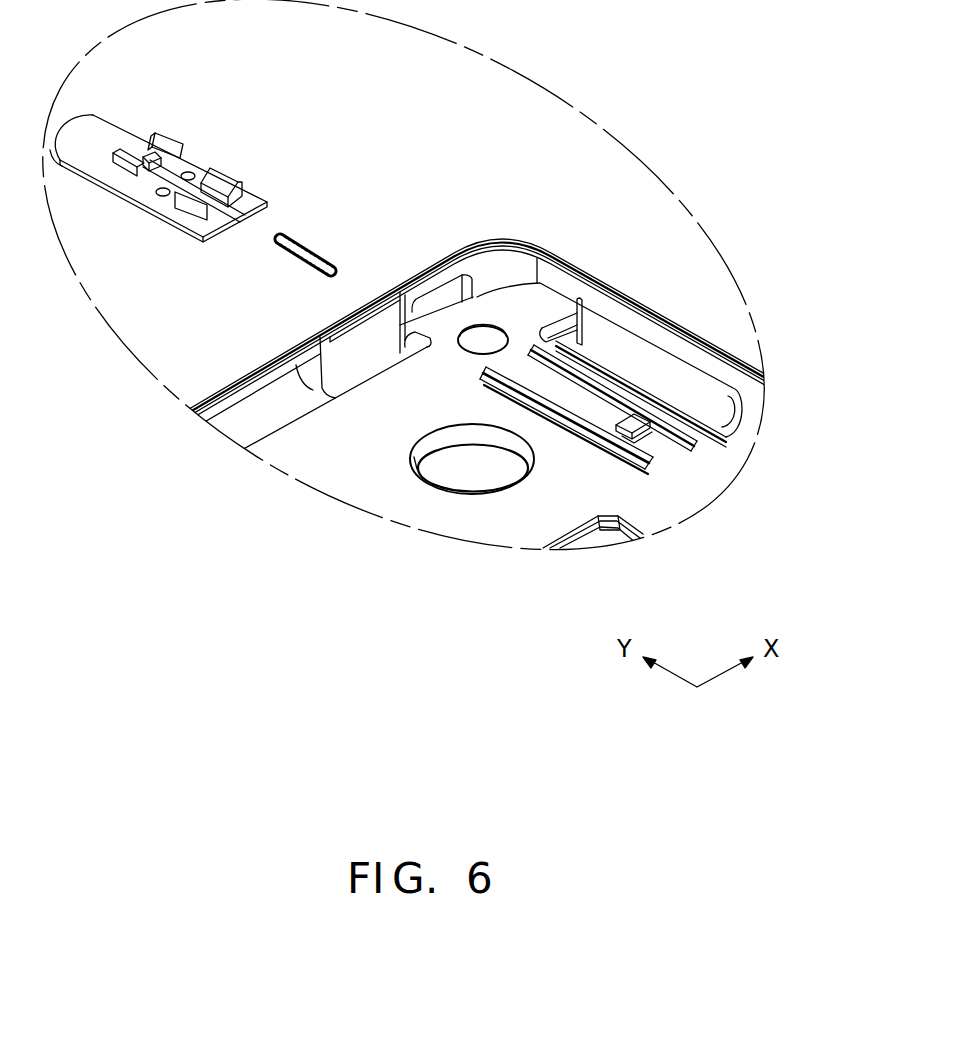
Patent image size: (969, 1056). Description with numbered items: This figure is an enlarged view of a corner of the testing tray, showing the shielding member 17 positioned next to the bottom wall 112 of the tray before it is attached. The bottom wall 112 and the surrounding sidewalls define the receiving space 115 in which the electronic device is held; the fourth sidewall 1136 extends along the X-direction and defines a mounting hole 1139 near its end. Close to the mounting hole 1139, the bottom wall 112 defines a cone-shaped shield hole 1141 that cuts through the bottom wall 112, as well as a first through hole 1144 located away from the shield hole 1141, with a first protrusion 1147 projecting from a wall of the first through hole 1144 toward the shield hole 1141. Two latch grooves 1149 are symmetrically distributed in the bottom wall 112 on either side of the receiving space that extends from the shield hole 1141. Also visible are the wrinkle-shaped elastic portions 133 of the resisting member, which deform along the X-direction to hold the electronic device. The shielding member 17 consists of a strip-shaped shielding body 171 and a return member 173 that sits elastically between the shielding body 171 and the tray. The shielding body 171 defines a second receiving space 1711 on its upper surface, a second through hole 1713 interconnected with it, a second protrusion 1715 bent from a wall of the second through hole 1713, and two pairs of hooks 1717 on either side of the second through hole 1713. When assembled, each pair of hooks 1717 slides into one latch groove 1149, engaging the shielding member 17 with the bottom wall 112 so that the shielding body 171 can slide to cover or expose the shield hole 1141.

The shielding member 17 is at (327, 106).
The shielding body 171 is at (192, 164).
The second receiving space 1711 is at (163, 175).
The second through hole 1713 is at (150, 180).
The second protrusion 1715 is at (147, 160).
The hooks 1717 is at (218, 165).
The return member 173 is at (300, 240).
The bottom wall 112 is at (303, 455).
The receiving space 115 is at (360, 405).
The fourth sidewall 1136 is at (232, 400).
The mounting hole 1139 is at (452, 297).
The shield hole 1141 is at (498, 333).
The first through hole 1144 is at (618, 422).
The first protrusion 1147 is at (645, 436).
The latch grooves 1149 is at (605, 323).
The elastic portions 133 is at (593, 355).